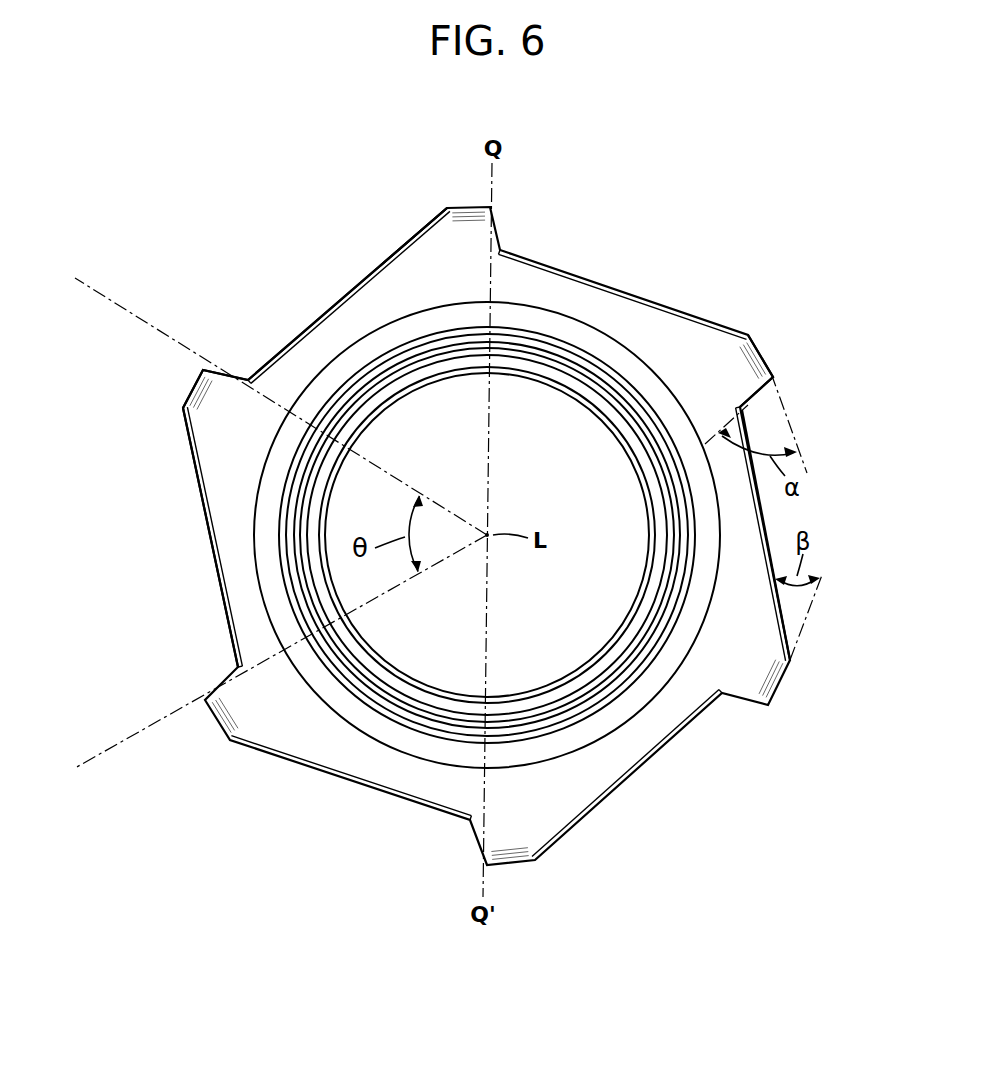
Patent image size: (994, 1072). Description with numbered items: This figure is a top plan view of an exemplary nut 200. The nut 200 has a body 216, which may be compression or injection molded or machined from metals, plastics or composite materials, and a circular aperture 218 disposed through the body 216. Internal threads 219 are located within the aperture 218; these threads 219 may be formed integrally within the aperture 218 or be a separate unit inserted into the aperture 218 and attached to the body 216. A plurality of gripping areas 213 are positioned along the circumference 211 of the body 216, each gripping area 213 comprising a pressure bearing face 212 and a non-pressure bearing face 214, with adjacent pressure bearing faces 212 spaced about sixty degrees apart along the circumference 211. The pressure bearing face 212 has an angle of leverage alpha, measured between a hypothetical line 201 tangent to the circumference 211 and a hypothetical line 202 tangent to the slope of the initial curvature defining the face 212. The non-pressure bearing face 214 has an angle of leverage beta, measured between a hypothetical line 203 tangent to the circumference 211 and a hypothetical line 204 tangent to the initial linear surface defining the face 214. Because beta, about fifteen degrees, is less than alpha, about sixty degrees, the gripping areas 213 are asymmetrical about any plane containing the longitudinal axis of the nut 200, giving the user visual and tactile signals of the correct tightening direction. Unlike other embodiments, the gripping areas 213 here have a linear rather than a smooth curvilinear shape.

The nut 200 is at (620, 183).
The hypothetical line 201 is at (795, 437).
The hypothetical line 202 is at (712, 440).
The hypothetical line 203 is at (806, 619).
The hypothetical line 204 is at (777, 620).
The circumference 211 is at (780, 372).
The pressure bearing face 212 is at (240, 375).
The gripping area 213 is at (318, 277).
The non-pressure bearing face 214 is at (428, 226).
The body 216 is at (233, 548).
The circular aperture 218 is at (350, 493).
The internal threads 219 is at (627, 427).